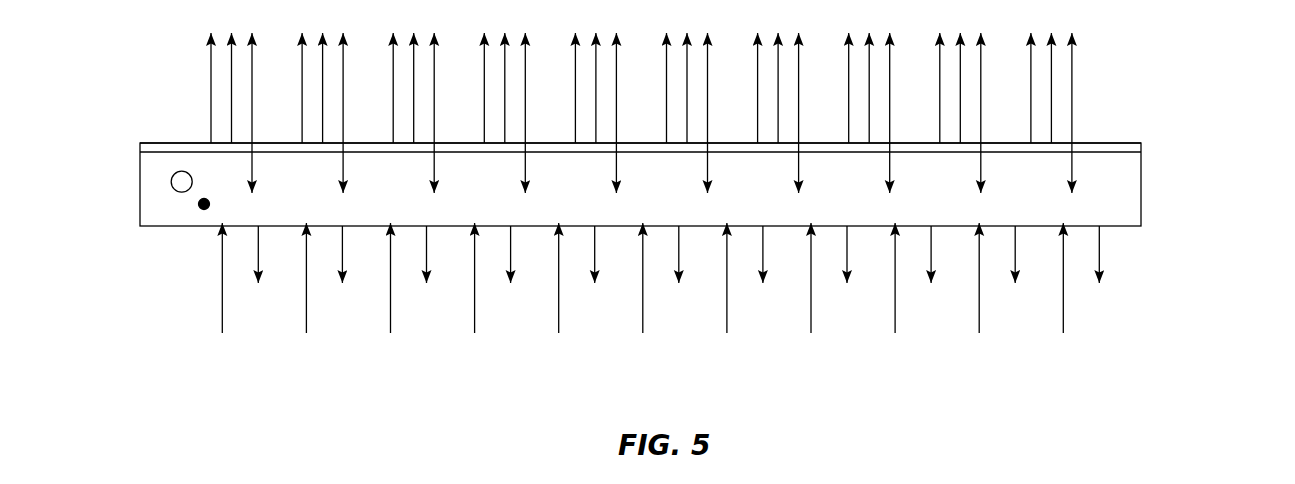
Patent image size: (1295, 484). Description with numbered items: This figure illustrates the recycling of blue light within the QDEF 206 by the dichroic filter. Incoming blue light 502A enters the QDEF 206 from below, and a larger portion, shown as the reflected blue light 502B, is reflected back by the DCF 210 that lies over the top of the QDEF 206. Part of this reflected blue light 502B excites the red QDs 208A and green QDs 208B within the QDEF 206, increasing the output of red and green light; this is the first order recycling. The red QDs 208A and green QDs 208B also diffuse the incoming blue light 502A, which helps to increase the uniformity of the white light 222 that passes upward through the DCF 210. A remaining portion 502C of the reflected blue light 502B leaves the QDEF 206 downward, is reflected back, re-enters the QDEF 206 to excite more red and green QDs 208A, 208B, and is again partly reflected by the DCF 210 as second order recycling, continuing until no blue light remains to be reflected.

The QDEF 206 is at (1072, 208).
The DCF 210 is at (1141, 147).
The red QDs 208A is at (172, 181).
The green QDs 208B is at (202, 210).
The white light 222 is at (1076, 62).
The incoming blue light 502A is at (1060, 320).
The reflected blue light 502B is at (1076, 165).
The remaining portion of the reflected blue light 502C is at (1018, 252).